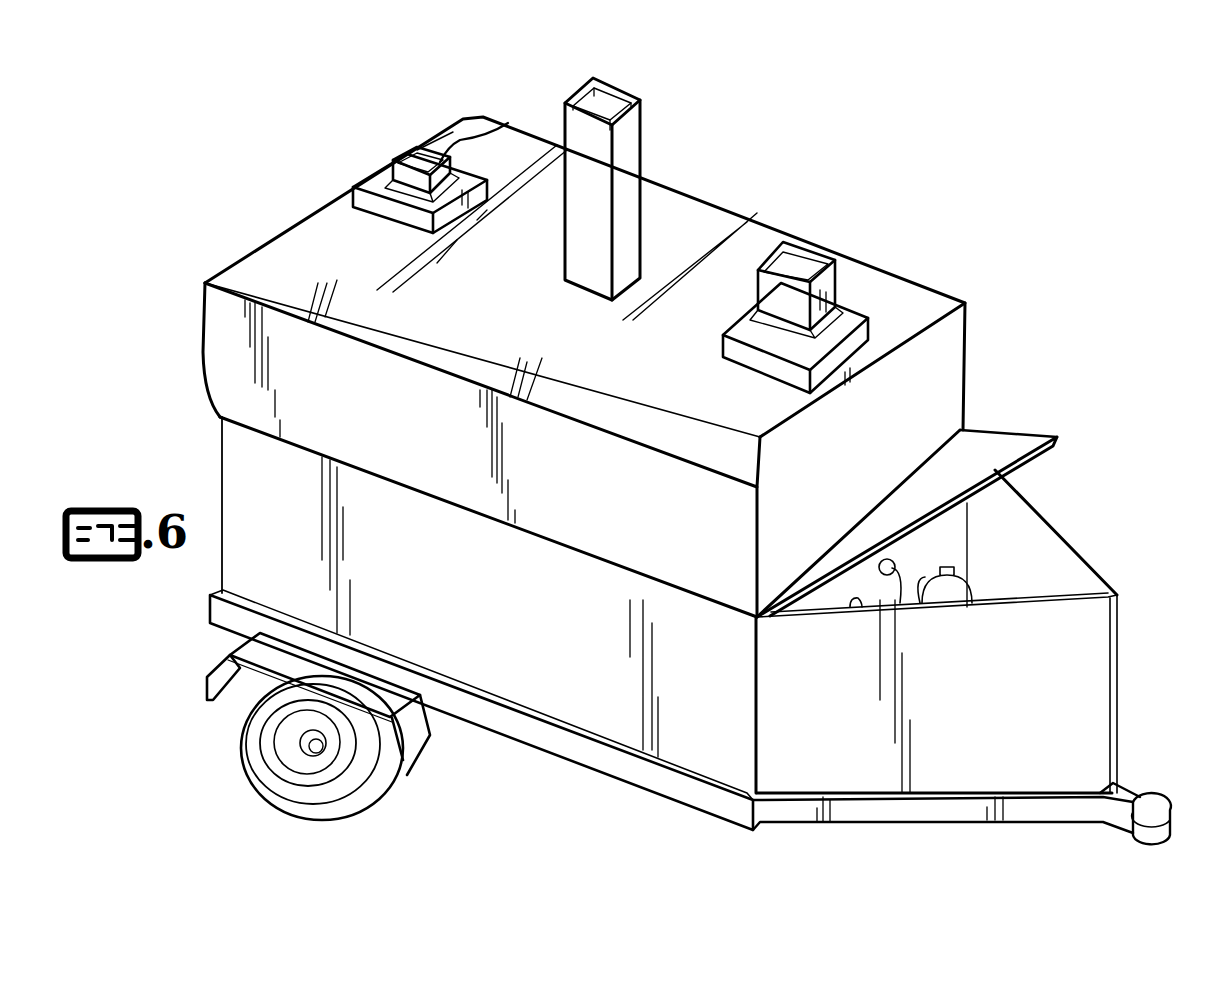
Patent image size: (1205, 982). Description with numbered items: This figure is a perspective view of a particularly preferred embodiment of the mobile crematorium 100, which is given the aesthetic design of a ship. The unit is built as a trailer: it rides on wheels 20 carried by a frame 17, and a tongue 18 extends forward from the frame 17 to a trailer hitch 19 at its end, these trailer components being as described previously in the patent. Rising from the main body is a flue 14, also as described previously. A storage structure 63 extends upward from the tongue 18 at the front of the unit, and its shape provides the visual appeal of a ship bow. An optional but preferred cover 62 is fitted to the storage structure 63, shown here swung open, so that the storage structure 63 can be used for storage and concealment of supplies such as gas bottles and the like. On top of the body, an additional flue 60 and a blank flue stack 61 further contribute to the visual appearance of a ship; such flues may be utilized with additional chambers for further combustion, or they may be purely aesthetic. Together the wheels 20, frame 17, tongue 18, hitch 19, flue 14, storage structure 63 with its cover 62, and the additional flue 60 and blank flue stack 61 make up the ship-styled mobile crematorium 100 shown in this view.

The mobile crematorium 100 is at (713, 157).
The additional flue 60 is at (628, 202).
The blank flue stack 61 is at (507, 124).
The flue 14 is at (807, 257).
The cover 62 is at (1030, 440).
The storage structure 63 is at (1063, 673).
The frame 17 is at (580, 752).
The tongue 18 is at (975, 820).
The trailer hitch 19 is at (1153, 808).
The wheels 20 is at (365, 800).